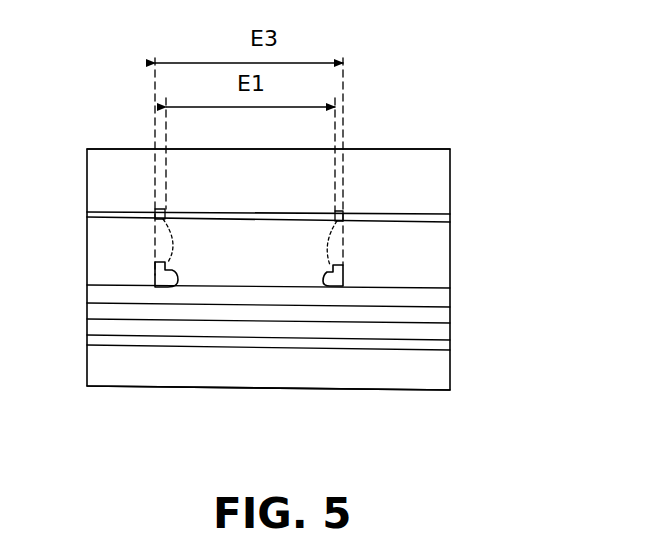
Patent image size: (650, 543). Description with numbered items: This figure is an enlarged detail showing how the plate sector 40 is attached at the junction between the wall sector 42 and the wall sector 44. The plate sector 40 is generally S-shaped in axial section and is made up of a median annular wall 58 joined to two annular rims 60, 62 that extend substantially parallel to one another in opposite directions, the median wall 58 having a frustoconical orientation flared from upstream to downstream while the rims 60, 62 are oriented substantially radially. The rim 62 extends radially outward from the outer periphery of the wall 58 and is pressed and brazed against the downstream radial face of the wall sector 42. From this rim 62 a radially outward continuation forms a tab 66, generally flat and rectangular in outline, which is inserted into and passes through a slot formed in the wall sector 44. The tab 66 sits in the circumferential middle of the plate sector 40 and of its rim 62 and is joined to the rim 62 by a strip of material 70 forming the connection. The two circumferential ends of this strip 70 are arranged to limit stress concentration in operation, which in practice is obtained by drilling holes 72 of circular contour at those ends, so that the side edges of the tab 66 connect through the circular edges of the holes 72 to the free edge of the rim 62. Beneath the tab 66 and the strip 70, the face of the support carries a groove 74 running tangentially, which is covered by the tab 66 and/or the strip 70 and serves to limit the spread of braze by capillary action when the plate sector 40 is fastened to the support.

The plate sector 40 is at (297, 389).
The wall sector 42 is at (437, 250).
The wall sector 44 is at (427, 203).
The median annular wall 58 is at (442, 335).
The annular rim 60 is at (438, 378).
The annular rim 62 is at (447, 290).
The tab 66 is at (308, 235).
The strip of material 70 is at (236, 270).
The holes 72 is at (155, 212).
The groove 74 is at (155, 270).